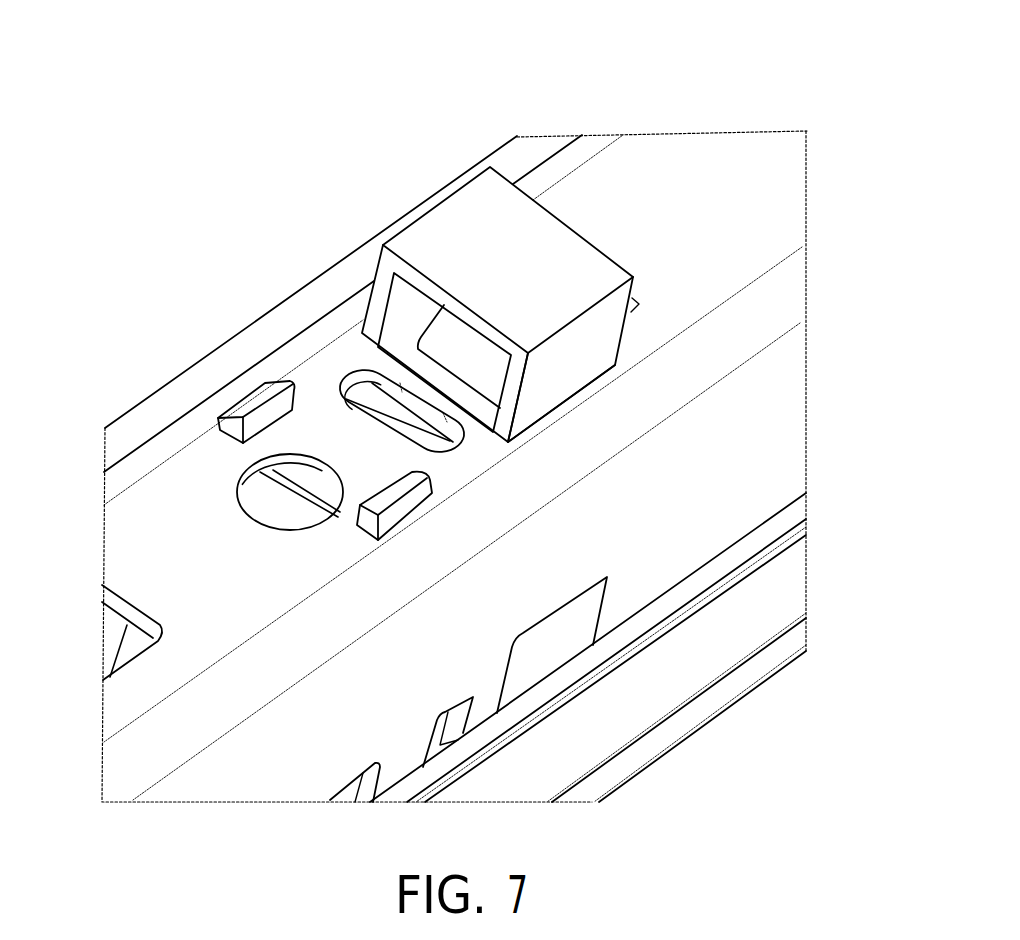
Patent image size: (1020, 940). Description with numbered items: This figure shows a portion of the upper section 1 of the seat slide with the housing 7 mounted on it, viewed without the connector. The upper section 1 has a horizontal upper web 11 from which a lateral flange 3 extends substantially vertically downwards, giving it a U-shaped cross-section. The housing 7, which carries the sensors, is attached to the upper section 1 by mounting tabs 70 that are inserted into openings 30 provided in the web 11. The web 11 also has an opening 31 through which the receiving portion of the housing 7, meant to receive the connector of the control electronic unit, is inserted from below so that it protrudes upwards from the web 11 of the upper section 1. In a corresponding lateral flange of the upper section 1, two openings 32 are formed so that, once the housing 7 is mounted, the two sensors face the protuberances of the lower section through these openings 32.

The upper section 1 is at (776, 98).
The lateral flange 3 is at (700, 474).
The housing 7 is at (488, 243).
The upper web 11 is at (185, 532).
The openings 30 is at (354, 554).
The opening 31 is at (603, 392).
The openings 32 is at (560, 673).
The mounting tabs 70 is at (263, 397).